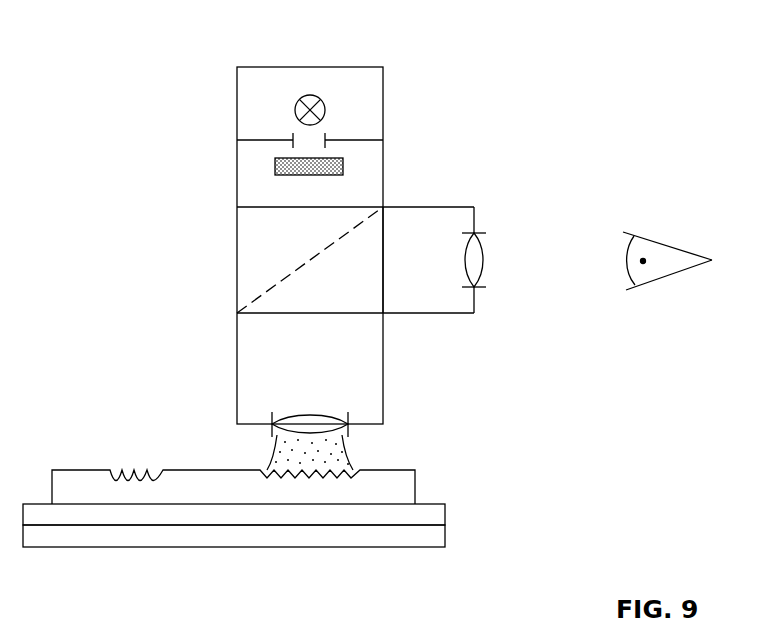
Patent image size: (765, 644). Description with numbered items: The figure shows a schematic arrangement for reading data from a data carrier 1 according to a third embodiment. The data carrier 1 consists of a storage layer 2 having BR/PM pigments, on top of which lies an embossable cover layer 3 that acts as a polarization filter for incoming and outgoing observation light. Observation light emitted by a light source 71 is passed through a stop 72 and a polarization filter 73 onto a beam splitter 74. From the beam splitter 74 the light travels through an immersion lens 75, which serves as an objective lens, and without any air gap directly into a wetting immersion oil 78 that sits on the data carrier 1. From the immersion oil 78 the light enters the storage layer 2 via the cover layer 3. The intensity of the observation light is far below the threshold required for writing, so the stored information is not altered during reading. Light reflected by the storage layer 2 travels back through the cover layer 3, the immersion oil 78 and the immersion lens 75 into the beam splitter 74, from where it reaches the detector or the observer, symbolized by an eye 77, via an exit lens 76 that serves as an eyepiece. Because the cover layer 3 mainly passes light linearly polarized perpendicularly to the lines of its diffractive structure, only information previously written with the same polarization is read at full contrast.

The data carrier 1 is at (433, 534).
The storage layer 2 is at (430, 518).
The cover layer 3 is at (404, 483).
The light source 71 is at (298, 100).
The stop 72 is at (310, 137).
The polarization filter 73 is at (297, 173).
The beam splitter 74 is at (275, 287).
The immersion lens 75 is at (297, 422).
The exit lens 76 is at (478, 261).
The eye 77 is at (668, 260).
The immersion oil 78 is at (323, 446).